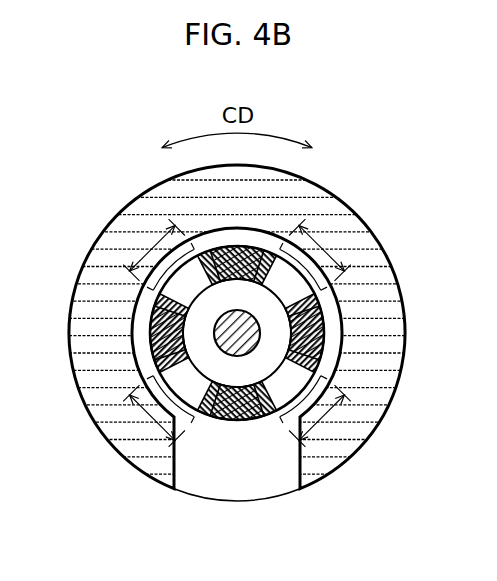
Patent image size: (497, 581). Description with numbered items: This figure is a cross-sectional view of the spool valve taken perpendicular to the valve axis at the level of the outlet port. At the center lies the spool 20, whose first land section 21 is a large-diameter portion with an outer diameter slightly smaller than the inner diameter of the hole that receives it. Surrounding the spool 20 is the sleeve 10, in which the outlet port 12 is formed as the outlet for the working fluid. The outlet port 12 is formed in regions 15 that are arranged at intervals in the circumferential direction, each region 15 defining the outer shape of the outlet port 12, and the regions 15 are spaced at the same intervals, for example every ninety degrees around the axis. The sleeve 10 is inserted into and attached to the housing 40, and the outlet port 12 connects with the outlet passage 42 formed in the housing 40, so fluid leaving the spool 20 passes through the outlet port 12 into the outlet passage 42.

The sleeve 10 is at (140, 310).
The outlet port 12 is at (150, 248).
The regions 15 is at (172, 232).
The spool 20 is at (240, 392).
The first land section 21 is at (323, 335).
The housing 40 is at (158, 186).
The outlet passage 42 is at (237, 492).